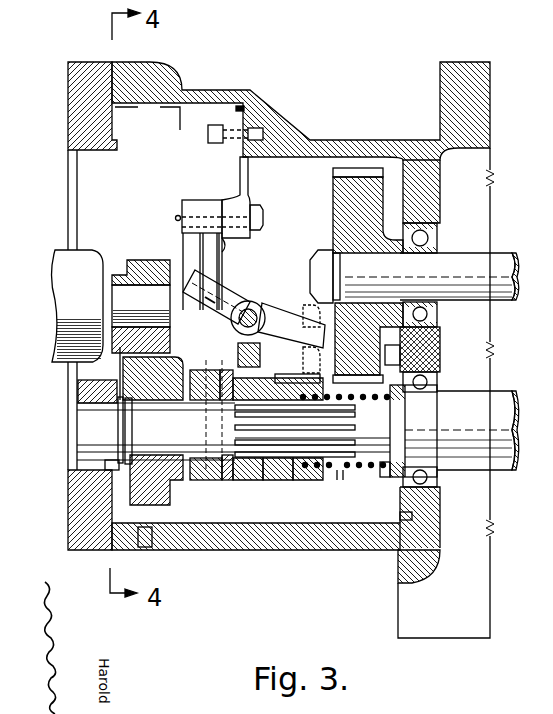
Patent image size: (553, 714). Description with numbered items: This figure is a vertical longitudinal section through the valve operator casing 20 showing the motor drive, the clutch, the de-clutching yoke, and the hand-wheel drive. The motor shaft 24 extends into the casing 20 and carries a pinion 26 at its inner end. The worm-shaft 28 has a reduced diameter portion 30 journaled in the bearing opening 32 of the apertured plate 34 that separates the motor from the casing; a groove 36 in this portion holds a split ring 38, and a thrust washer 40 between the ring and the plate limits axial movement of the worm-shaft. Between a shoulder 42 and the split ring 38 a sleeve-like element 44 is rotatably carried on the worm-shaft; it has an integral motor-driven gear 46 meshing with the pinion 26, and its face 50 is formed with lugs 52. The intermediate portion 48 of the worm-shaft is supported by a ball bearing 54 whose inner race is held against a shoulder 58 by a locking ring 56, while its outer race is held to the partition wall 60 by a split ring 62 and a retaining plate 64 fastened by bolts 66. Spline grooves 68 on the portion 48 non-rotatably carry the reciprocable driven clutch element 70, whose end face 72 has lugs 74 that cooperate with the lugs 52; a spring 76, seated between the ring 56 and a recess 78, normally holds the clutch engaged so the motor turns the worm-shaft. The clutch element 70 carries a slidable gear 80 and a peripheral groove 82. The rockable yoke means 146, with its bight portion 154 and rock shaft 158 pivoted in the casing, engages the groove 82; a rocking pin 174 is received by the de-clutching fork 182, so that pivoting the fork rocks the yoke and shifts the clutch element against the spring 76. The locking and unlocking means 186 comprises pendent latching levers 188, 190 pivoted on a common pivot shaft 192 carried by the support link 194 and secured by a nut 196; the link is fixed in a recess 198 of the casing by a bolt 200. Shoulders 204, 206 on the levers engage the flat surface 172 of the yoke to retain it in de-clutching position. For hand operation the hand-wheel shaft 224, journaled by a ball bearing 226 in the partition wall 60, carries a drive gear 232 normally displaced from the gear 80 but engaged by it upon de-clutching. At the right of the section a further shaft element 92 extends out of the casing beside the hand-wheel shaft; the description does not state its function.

The casing 20 is at (250, 552).
The shaft 24 is at (141, 319).
The pinion 26 is at (156, 258).
The worm-shaft 28 is at (382, 478).
The reduced diameter portion 30 is at (87, 433).
The bearing opening 32 is at (78, 407).
The apertured plate 34 is at (78, 515).
The groove 36 is at (132, 428).
The split ring 38 is at (118, 404).
The thrust washer 40 is at (108, 466).
The shoulder 42 is at (184, 468).
The sleeve-like element 44 is at (195, 480).
The motor-driven gear 46 is at (147, 532).
The intermediate portion 48 is at (332, 472).
The face 50 is at (227, 480).
The lugs 52 is at (245, 482).
The ball bearing 54 is at (438, 503).
The locking ring 56 is at (408, 480).
The shoulder 58 is at (435, 402).
The partition wall 60 is at (432, 187).
The split ring 62 is at (410, 517).
The retaining plate 64 is at (395, 553).
The bolts 66 is at (440, 352).
The spline grooves 68 is at (352, 432).
The driven clutch element 70 is at (283, 480).
The end face 72 is at (222, 395).
The lugs 74 is at (218, 395).
The spring 76 is at (347, 472).
The recess 78 is at (315, 470).
The slidable gear 80 is at (297, 480).
The peripheral groove 82 is at (251, 473).
The output shaft 92 is at (498, 403).
The rockable yoke means 146 is at (272, 264).
The bight portion 154 is at (257, 357).
The rock shaft 158 is at (250, 313).
The flat surface 172 is at (212, 272).
The rocking pin 174 is at (304, 332).
The de-clutching fork 182 is at (313, 300).
The locking and unlocking means 186 is at (163, 210).
The latching lever 188 is at (187, 266).
The latching lever 190 is at (224, 250).
The common pivot shaft 192 is at (178, 205).
The support link 194 is at (243, 186).
The nut 196 is at (260, 210).
The recess 198 is at (241, 108).
The bolt 200 is at (210, 132).
The notch-forming shoulder 204 is at (133, 274).
The notch-forming shoulder 206 is at (216, 294).
The hand-wheel shaft 224 is at (505, 254).
The ball bearing 226 is at (425, 238).
The drive gear 232 is at (352, 170).